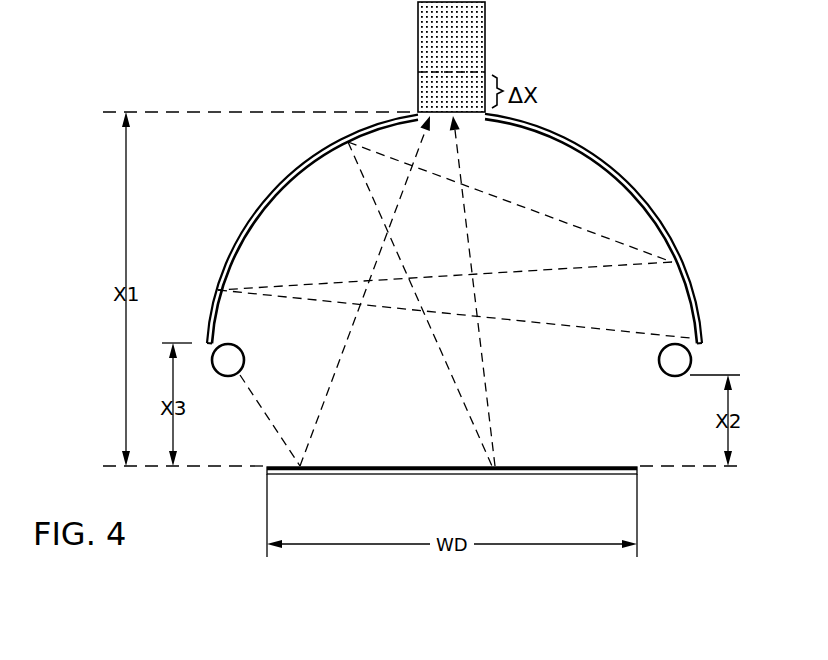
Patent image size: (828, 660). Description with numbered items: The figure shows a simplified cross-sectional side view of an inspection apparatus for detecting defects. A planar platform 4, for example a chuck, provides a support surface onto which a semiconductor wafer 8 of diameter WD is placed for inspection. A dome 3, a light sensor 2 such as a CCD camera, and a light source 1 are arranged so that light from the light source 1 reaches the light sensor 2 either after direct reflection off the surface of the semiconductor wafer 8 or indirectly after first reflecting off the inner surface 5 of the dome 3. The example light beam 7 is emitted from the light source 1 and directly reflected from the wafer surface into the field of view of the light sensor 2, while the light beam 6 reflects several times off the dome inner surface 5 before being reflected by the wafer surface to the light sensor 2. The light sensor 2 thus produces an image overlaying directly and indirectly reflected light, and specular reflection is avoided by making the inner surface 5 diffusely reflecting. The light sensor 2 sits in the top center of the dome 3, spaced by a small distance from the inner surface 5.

The light source 1 is at (244, 358).
The light sensor 2 is at (412, 28).
The dome 3 is at (606, 147).
The planar platform 4 is at (387, 485).
The inner surface 5 is at (284, 192).
The light beam 6 is at (460, 160).
The light beam 7 is at (348, 363).
The semiconductor wafer 8 is at (556, 455).